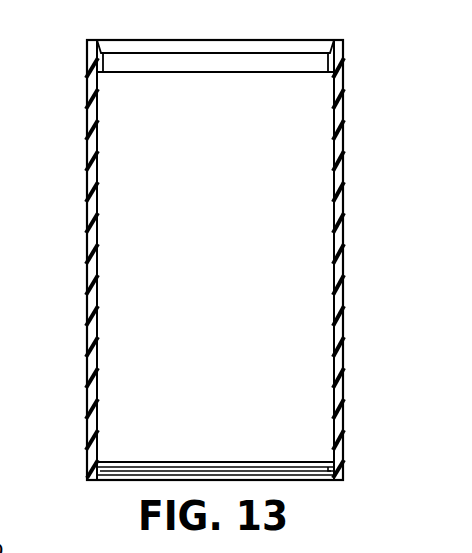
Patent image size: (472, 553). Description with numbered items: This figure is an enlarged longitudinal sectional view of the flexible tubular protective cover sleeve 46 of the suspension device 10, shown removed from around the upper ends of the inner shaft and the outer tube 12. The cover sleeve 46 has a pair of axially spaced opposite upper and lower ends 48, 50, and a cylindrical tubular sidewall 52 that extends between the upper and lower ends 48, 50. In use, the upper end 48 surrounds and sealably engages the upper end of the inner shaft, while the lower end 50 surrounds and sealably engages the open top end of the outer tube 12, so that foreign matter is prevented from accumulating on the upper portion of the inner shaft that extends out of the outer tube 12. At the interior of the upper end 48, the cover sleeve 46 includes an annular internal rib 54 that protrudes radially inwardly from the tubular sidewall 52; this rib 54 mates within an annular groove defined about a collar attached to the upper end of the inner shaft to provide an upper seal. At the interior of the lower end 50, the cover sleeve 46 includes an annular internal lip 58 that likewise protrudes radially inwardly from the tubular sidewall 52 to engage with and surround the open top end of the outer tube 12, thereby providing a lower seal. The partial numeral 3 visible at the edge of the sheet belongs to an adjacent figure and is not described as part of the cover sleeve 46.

The flexible tubular protective cover sleeve 46 is at (371, 93).
The upper end 48 is at (89, 63).
The lower end 50 is at (344, 468).
The cylindrical tubular sidewall 52 is at (344, 292).
The annular internal rib 54 is at (100, 68).
The annular internal lip 58 is at (106, 478).
The partial numeral of adjacent figure 3 is at (463, 216).
The outer tube 12 is at (460, 481).
The suspension device 10 is at (203, 547).